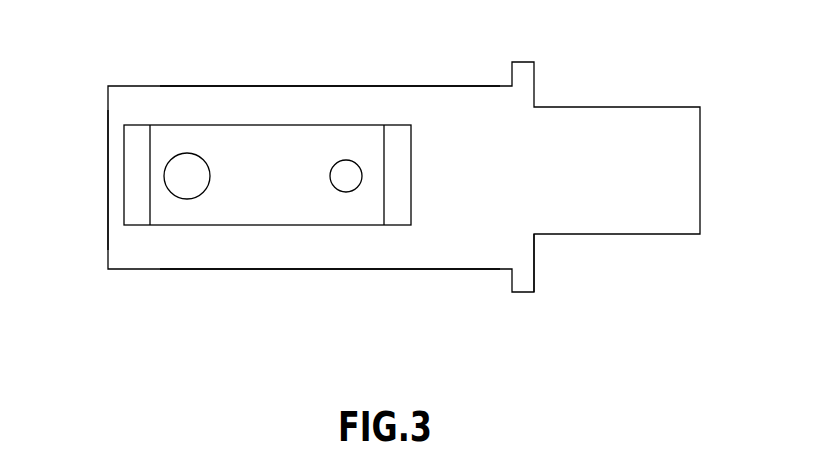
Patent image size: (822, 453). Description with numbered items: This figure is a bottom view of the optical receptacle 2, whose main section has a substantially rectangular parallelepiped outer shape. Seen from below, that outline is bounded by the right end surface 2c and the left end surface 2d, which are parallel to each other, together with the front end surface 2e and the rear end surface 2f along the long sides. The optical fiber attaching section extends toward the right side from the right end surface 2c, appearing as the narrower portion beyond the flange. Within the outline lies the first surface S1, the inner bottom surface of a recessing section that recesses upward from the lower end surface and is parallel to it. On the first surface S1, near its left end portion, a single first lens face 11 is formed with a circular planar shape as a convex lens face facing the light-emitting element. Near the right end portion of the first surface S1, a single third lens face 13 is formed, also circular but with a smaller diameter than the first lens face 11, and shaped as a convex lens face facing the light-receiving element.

The optical receptacle 2 is at (135, 86).
The right end surface 2c is at (536, 247).
The left end surface 2d is at (107, 178).
The front end surface 2e is at (424, 86).
The rear end surface 2f is at (422, 269).
The first surface S1 is at (282, 155).
The first lens face 11 is at (186, 199).
The third lens face 13 is at (346, 192).